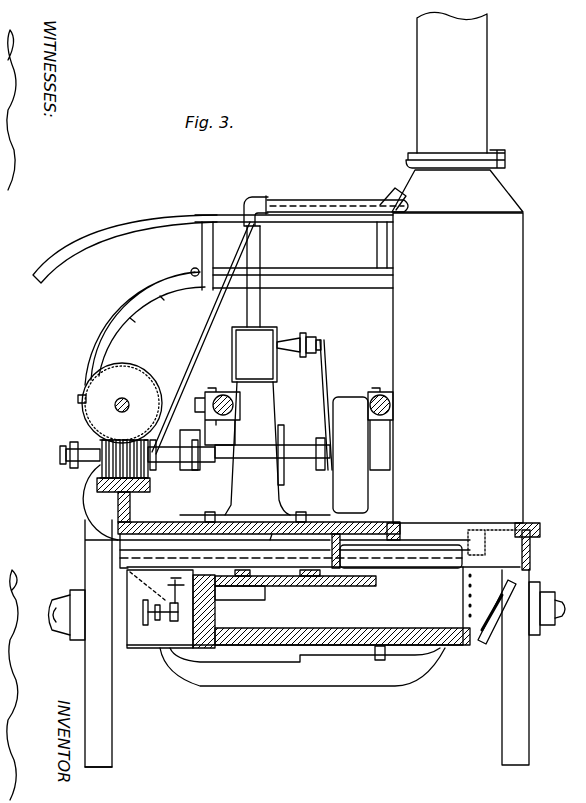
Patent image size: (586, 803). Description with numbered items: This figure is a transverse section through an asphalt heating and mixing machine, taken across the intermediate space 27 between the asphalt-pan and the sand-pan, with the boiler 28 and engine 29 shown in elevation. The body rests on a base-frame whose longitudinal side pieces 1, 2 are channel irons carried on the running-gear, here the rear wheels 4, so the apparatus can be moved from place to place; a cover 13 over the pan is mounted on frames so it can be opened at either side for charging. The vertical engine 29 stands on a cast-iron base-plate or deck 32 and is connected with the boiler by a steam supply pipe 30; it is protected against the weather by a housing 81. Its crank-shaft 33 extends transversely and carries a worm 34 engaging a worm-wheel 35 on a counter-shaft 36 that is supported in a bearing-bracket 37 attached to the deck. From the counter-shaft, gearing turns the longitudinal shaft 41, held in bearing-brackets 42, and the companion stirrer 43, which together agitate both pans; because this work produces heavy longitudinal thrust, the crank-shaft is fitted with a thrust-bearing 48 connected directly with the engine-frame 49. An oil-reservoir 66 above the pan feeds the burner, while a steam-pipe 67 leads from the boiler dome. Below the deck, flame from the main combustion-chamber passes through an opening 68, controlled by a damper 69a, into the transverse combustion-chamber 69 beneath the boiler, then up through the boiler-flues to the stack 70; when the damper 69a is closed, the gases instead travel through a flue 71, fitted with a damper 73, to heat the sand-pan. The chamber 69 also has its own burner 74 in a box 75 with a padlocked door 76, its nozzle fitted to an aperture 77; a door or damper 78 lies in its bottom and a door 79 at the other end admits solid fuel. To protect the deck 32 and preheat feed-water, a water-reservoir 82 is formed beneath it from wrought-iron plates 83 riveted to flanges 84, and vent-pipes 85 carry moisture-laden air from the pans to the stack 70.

The longitudinal side piece 1 is at (118, 545).
The longitudinal side piece 2 is at (532, 545).
The rear wheels 4 is at (307, 668).
The cover 13 is at (145, 326).
The intermediate space 27 is at (279, 276).
The boiler 28 is at (457, 346).
The engine 29 is at (276, 354).
The steam supply pipe 30 is at (326, 204).
The base-plate or deck 32 is at (337, 540).
The crank-shaft 33 is at (62, 455).
The worm 34 is at (100, 480).
The worm-wheel 35 is at (85, 411).
The counter-shaft 36 is at (122, 403).
The bearing-bracket 37 is at (116, 502).
The longitudinal shaft 41 is at (234, 403).
The bearing-bracket 42 is at (224, 393).
The stirrer 43 is at (380, 394).
The thrust-bearing 48 is at (183, 464).
The engine-frame 49 is at (257, 448).
The oil-reservoir 66 is at (294, 252).
The steam-pipe 67 is at (206, 326).
The opening 68 is at (420, 536).
The transverse combustion-chamber 69 is at (323, 606).
The damper 69a is at (410, 566).
The stack 70 is at (455, 90).
The flue 71 is at (242, 546).
The damper 73 is at (291, 559).
The burner 74 is at (168, 620).
The box 75 is at (152, 642).
The door 76 is at (114, 626).
The aperture 77 is at (212, 612).
The door or damper 78 is at (300, 660).
The door 79 is at (510, 615).
The housing 81 is at (125, 239).
The water-reservoir 82 is at (270, 540).
The plates 83 is at (190, 542).
The flanges 84 is at (140, 548).
The vent-pipes 85 is at (394, 198).